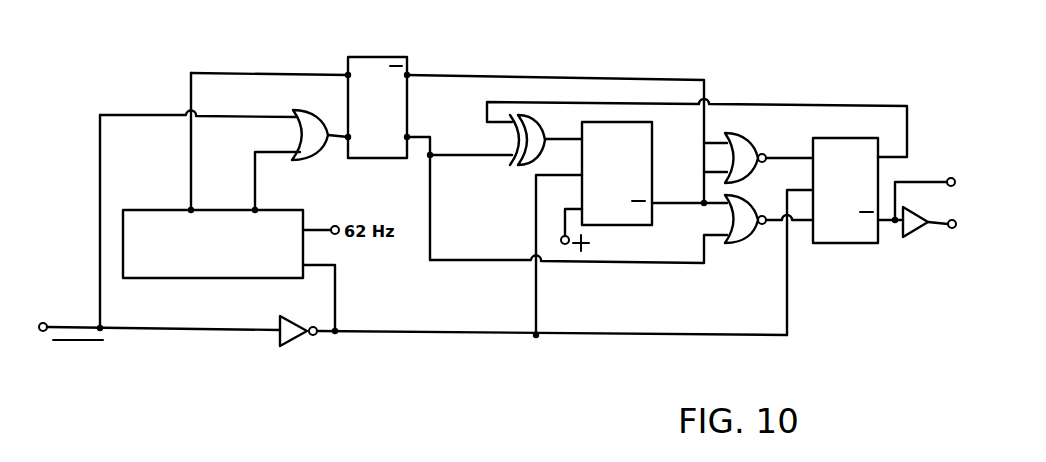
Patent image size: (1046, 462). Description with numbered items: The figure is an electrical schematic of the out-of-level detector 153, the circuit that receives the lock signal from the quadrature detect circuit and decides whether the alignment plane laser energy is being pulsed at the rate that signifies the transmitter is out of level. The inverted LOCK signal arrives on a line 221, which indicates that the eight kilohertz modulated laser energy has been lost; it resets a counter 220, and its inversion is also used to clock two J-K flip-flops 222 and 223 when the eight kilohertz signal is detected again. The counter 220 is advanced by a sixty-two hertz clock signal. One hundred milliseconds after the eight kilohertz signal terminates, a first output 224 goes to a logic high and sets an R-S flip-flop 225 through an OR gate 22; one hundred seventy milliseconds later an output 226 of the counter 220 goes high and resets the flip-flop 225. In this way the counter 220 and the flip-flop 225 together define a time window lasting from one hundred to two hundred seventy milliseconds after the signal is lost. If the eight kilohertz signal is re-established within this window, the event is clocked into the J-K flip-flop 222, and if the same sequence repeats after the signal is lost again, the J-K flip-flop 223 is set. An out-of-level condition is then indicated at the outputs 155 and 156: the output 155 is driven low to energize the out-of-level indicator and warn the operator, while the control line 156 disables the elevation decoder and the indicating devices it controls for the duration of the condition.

The out-of-level detector 153 is at (480, 360).
The line 221 is at (40, 323).
The first output 224 is at (191, 173).
The output 226 is at (255, 177).
The OR gate 22 is at (298, 110).
The R-S flip-flop 225 is at (396, 113).
The J-K flip-flop 222 is at (643, 160).
The J-K flip-flop 223 is at (870, 200).
The counter 220 is at (165, 279).
The control line 156 is at (951, 178).
The output 155 is at (946, 232).